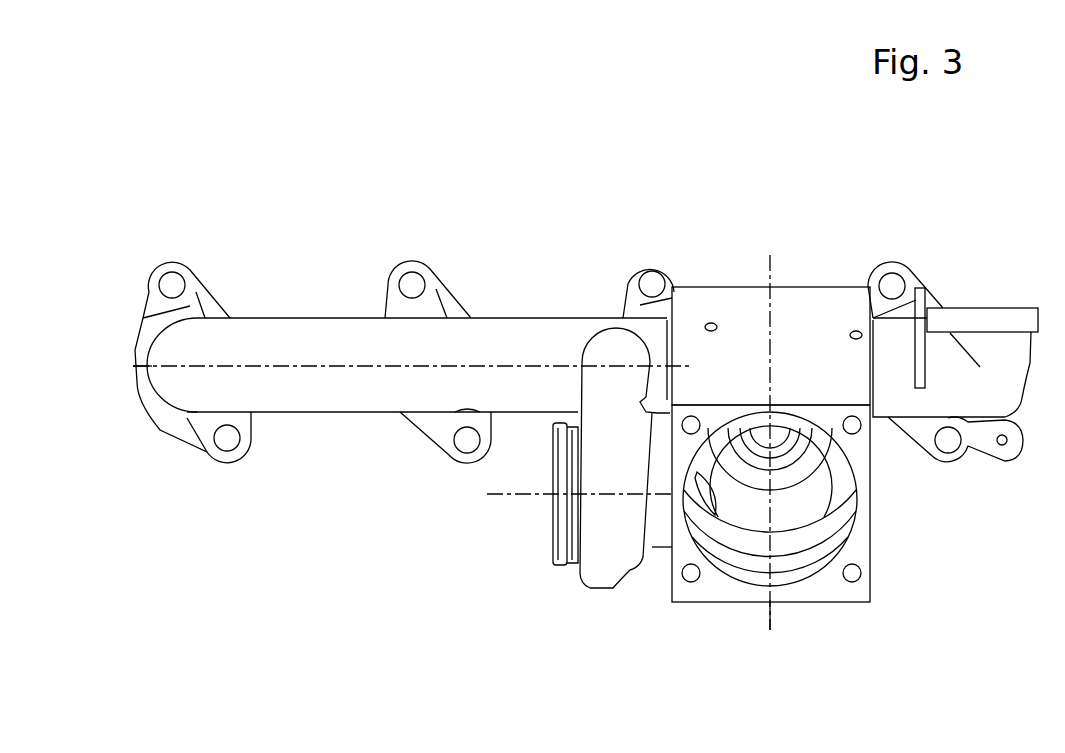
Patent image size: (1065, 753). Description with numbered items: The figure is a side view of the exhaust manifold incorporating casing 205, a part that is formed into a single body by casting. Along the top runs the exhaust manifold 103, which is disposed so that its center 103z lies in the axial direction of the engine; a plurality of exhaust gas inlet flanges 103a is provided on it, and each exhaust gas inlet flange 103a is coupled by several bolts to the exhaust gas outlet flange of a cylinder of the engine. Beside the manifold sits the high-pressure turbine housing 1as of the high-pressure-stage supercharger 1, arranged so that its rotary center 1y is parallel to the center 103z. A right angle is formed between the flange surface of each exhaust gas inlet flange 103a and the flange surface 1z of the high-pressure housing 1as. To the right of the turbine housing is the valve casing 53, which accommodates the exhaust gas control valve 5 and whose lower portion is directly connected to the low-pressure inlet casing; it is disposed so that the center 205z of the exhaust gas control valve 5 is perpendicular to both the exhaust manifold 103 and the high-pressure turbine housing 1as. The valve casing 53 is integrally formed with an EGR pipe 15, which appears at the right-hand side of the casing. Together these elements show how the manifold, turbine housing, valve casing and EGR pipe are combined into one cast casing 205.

The high-pressure-stage supercharger 1 is at (572, 580).
The high-pressure turbine housing 1as is at (600, 575).
The flange surface 1z is at (553, 545).
The rotary center 1y is at (503, 495).
The exhaust gas control valve 5 is at (823, 488).
The valve casing 53 is at (811, 595).
The EGR pipe 15 is at (1003, 312).
The exhaust manifold 103 is at (327, 403).
The exhaust gas inlet flange 103a is at (200, 294).
The center 103z is at (314, 368).
The exhaust manifold incorporating casing 205 is at (771, 250).
The center of the exhaust gas control valve 205z is at (770, 620).